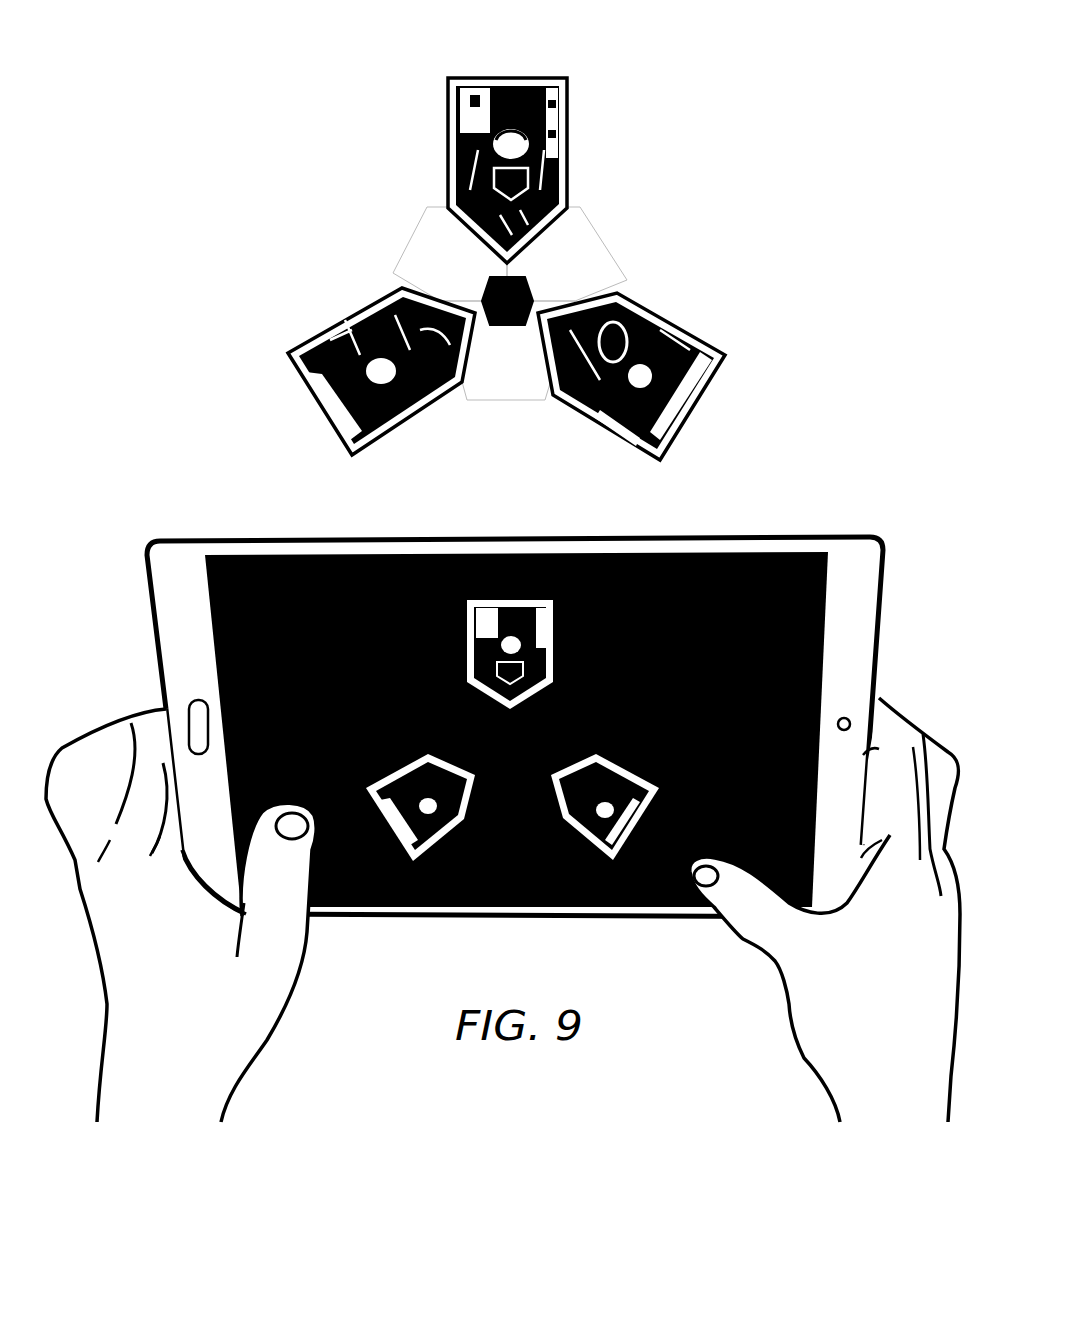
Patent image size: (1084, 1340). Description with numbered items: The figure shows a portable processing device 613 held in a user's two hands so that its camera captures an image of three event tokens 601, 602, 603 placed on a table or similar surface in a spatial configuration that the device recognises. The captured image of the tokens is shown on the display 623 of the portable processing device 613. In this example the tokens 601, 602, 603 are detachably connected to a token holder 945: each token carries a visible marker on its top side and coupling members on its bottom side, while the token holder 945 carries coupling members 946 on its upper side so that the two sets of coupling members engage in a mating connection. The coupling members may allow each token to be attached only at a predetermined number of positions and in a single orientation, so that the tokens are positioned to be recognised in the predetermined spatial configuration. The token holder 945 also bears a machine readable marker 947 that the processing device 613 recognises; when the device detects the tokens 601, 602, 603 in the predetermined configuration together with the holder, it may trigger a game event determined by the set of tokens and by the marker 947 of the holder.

The event token 601 is at (345, 317).
The event token 602 is at (457, 77).
The event token 603 is at (663, 317).
The token holder 945 is at (405, 240).
The coupling members 946 is at (507, 358).
The machine readable marker 947 is at (522, 272).
The portable processing device 613 is at (232, 536).
The display 623 is at (713, 553).